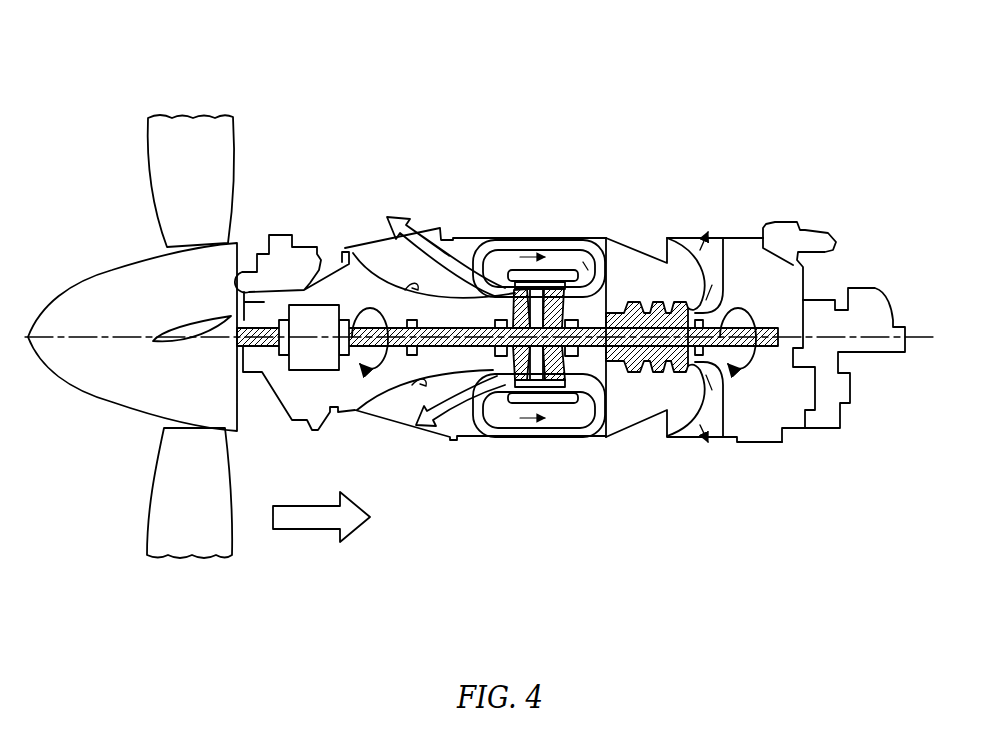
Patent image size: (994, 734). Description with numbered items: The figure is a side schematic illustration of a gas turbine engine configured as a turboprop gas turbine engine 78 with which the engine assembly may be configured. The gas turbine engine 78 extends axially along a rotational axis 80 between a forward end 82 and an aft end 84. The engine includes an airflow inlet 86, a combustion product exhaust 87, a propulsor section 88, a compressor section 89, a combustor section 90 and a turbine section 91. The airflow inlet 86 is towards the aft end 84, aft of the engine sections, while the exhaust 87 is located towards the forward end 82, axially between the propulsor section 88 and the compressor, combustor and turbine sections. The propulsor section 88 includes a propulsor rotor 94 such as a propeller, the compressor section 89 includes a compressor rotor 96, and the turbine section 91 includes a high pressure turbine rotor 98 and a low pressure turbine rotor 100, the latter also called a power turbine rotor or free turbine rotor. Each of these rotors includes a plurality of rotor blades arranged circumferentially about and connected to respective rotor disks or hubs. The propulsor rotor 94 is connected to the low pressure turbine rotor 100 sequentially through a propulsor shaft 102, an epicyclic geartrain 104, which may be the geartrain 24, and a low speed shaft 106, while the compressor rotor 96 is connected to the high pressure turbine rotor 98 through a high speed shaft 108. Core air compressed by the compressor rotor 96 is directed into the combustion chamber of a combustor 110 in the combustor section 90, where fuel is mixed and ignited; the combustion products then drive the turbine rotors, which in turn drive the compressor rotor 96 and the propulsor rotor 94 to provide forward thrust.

The turboprop gas turbine engine 78 is at (572, 114).
The rotational axis 80 is at (922, 338).
The forward end 82 is at (22, 350).
The aft end 84 is at (906, 328).
The airflow inlet 86 is at (719, 230).
The combustion product exhaust 87 is at (429, 216).
The propulsor section 88 is at (208, 96).
The compressor section 89 is at (650, 394).
The combustor section 90 is at (506, 234).
The turbine section 91 is at (538, 270).
The propulsor rotor 94 is at (164, 427).
The compressor rotor 96 is at (652, 302).
The high pressure turbine rotor 98 is at (563, 403).
The low pressure turbine rotor 100 is at (498, 374).
The propulsor shaft 102 is at (265, 348).
The epicyclic geartrain 104 is at (321, 296).
The geartrain 24 is at (318, 287).
The low speed shaft 106 is at (401, 326).
The high speed shaft 108 is at (605, 402).
The combustor 110 is at (574, 250).